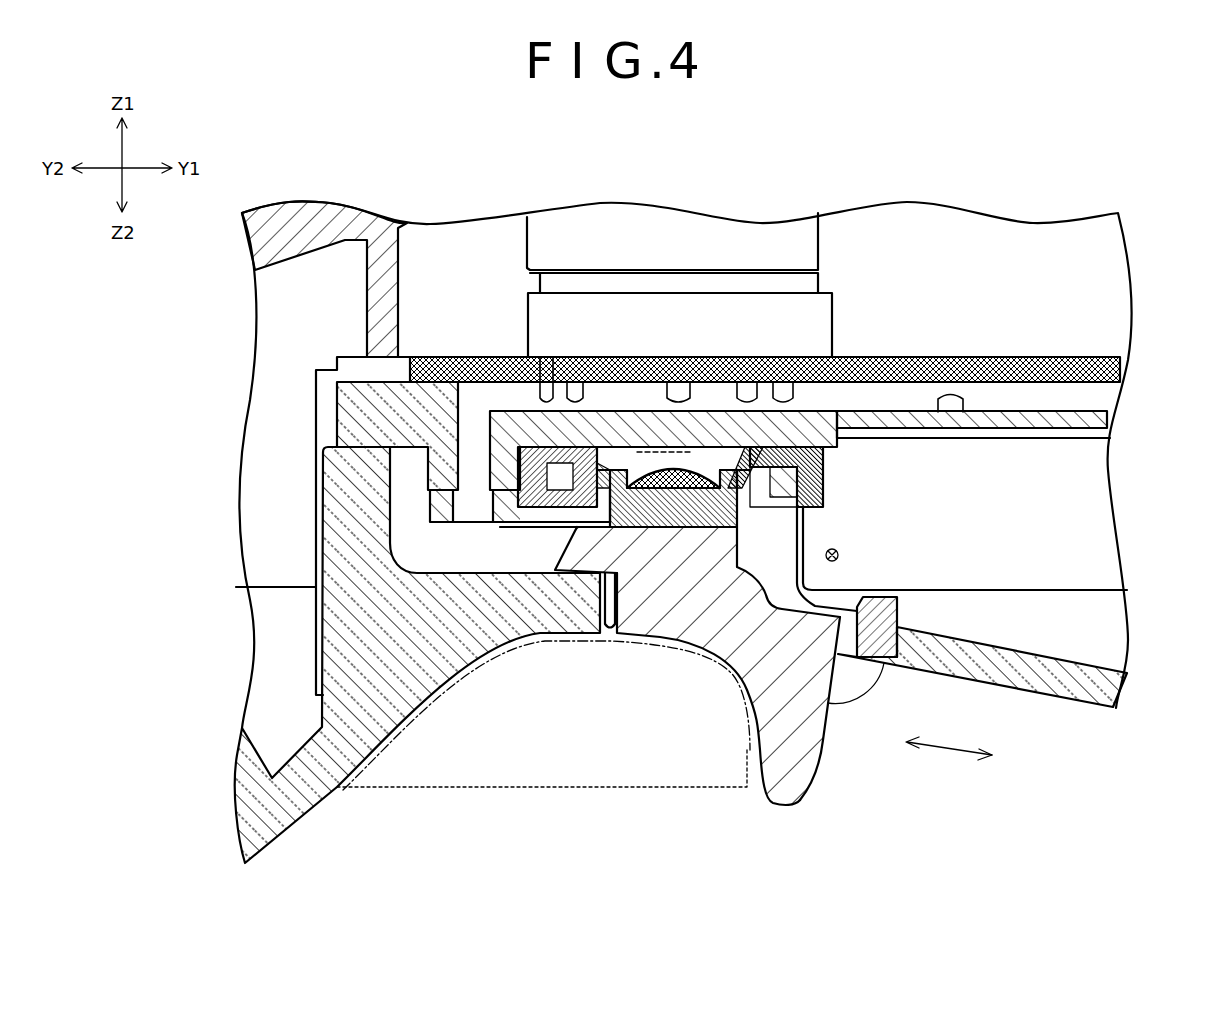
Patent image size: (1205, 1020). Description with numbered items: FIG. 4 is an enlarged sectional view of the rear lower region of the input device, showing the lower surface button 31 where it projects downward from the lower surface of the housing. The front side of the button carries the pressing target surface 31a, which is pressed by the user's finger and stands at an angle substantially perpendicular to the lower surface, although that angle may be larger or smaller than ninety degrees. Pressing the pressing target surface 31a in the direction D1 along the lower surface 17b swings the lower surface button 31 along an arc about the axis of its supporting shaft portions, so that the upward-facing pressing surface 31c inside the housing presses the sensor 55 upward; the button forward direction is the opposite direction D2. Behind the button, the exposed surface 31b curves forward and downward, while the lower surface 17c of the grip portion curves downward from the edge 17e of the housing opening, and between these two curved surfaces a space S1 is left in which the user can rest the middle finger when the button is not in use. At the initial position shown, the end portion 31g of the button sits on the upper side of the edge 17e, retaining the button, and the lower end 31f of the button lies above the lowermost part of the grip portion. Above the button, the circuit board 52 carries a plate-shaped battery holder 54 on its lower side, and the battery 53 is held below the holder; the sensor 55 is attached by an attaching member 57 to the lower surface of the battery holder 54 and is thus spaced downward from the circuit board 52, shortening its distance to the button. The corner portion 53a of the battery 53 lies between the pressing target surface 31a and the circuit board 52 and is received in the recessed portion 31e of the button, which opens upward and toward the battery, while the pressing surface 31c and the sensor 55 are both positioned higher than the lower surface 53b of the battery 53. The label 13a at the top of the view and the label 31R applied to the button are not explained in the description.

The cover member 13a is at (808, 238).
The circuit board 52 is at (1098, 358).
The battery 53 is at (1047, 437).
The corner portion of the battery 53a is at (897, 612).
The lower surface of the battery 53b is at (1063, 592).
The battery holder 54 is at (968, 410).
The sensor 55 is at (627, 450).
The attaching member 57 is at (514, 411).
The lower surface button 31 is at (663, 708).
The seal member rear portion 31R is at (663, 708).
The pressing target surface 31a is at (815, 770).
The exposed surface 31b is at (688, 661).
The pressing surface 31c is at (690, 522).
The recessed portion 31e is at (796, 559).
The lower end of the lower surface button 31f is at (780, 806).
The end portion of the lower surface button 31g is at (580, 551).
The lower surface 17b is at (1070, 699).
The lower surface of the grip portion 17c is at (453, 677).
The edge of the opening 17e is at (610, 612).
The space S1 is at (510, 789).
The direction D1 is at (931, 743).
The direction D2 is at (1003, 759).